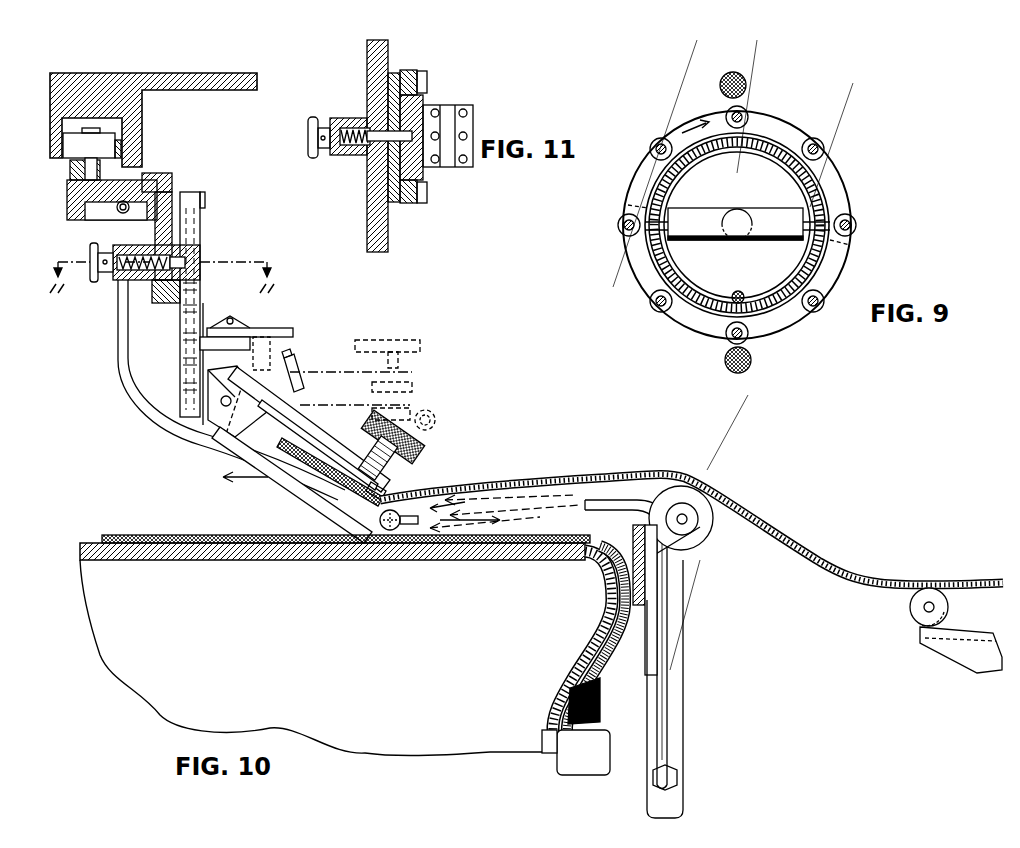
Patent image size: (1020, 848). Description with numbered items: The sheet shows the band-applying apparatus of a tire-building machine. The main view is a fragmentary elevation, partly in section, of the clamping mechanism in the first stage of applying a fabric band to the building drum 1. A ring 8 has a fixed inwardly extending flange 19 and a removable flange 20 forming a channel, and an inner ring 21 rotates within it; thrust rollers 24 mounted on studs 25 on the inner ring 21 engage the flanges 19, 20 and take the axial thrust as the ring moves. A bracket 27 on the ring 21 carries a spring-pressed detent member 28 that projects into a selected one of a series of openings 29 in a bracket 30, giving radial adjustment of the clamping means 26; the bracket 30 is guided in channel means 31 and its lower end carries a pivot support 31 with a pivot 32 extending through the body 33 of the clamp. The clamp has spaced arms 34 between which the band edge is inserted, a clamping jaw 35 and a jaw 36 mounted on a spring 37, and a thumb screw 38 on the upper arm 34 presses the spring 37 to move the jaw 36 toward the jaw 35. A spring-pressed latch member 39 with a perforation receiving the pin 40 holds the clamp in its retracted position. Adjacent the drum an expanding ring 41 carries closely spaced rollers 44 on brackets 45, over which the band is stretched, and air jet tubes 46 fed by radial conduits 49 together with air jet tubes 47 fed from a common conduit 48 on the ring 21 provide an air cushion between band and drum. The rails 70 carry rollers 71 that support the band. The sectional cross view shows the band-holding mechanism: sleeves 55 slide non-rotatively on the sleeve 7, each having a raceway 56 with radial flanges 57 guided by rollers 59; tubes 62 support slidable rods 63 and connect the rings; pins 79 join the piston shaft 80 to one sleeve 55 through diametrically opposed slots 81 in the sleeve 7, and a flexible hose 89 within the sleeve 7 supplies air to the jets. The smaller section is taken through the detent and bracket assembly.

In FIG. 10, the building drum 1 is at (82, 551).
In FIG. 9, the sleeve 7 is at (812, 190).
In FIG. 10, the ring 8 is at (52, 78).
In FIG. 10, the fixed inwardly extending flange 19 is at (138, 130).
In FIG. 10, the removable flange 20 is at (58, 118).
In FIG. 10, the inner ring 21 is at (86, 212).
In FIG. 10, the thrust rollers 24 is at (72, 150).
In FIG. 10, the studs 25 is at (74, 190).
In FIG. 10, the clamping means 26 is at (412, 376).
In FIG. 11, the bracket 27 is at (367, 62).
In FIG. 10, the bracket 27 is at (163, 190).
In FIG. 11, the spring-pressed detent member 28 is at (385, 165).
In FIG. 10, the spring-pressed detent member 28 is at (163, 300).
In FIG. 10, the openings 29 is at (183, 320).
In FIG. 11, the bracket 30 is at (425, 172).
In FIG. 10, the bracket 30 is at (199, 259).
In FIG. 11, the channel means / pivot support 31 is at (415, 72).
In FIG. 10, the channel means / pivot support 31 is at (200, 224).
In FIG. 10, the pivot 32 is at (225, 408).
In FIG. 10, the body 33 is at (245, 372).
In FIG. 10, the spaced arms 34 is at (313, 426).
In FIG. 10, the clamping jaw 35 is at (356, 497).
In FIG. 10, the clamping jaw 36 is at (386, 492).
In FIG. 10, the spring 37 is at (280, 432).
In FIG. 10, the thumb screw 38 is at (400, 340).
In FIG. 11, the spring-pressed latch member 39 is at (466, 106).
In FIG. 10, the spring-pressed latch member 39 is at (276, 332).
In FIG. 10, the pin 40 is at (292, 357).
In FIG. 10, the expanding ring 41 is at (641, 672).
In FIG. 10, the rollers 44 is at (703, 527).
In FIG. 10, the brackets 45 is at (672, 547).
In FIG. 10, the air jet tubes 46 is at (612, 500).
In FIG. 10, the air jet tubes 47 is at (141, 394).
In FIG. 10, the common conduit 48 is at (120, 212).
In FIG. 10, the radial conduits 49 is at (683, 705).
In FIG. 9, the sleeves 55 is at (648, 255).
In FIG. 9, the raceway 56 is at (843, 210).
In FIG. 9, the radial flanges 57 is at (640, 188).
In FIG. 9, the rollers 59 is at (822, 146).
In FIG. 9, the tubes 62 is at (745, 81).
In FIG. 9, the slidable rods 63 is at (722, 88).
In FIG. 10, the rails 70 is at (960, 645).
In FIG. 10, the rollers 71 is at (910, 612).
In FIG. 9, the pins 79 is at (670, 240).
In FIG. 9, the piston shaft 80 is at (716, 216).
In FIG. 9, the slots 81 is at (625, 207).
In FIG. 9, the flexible hose 89 is at (737, 292).